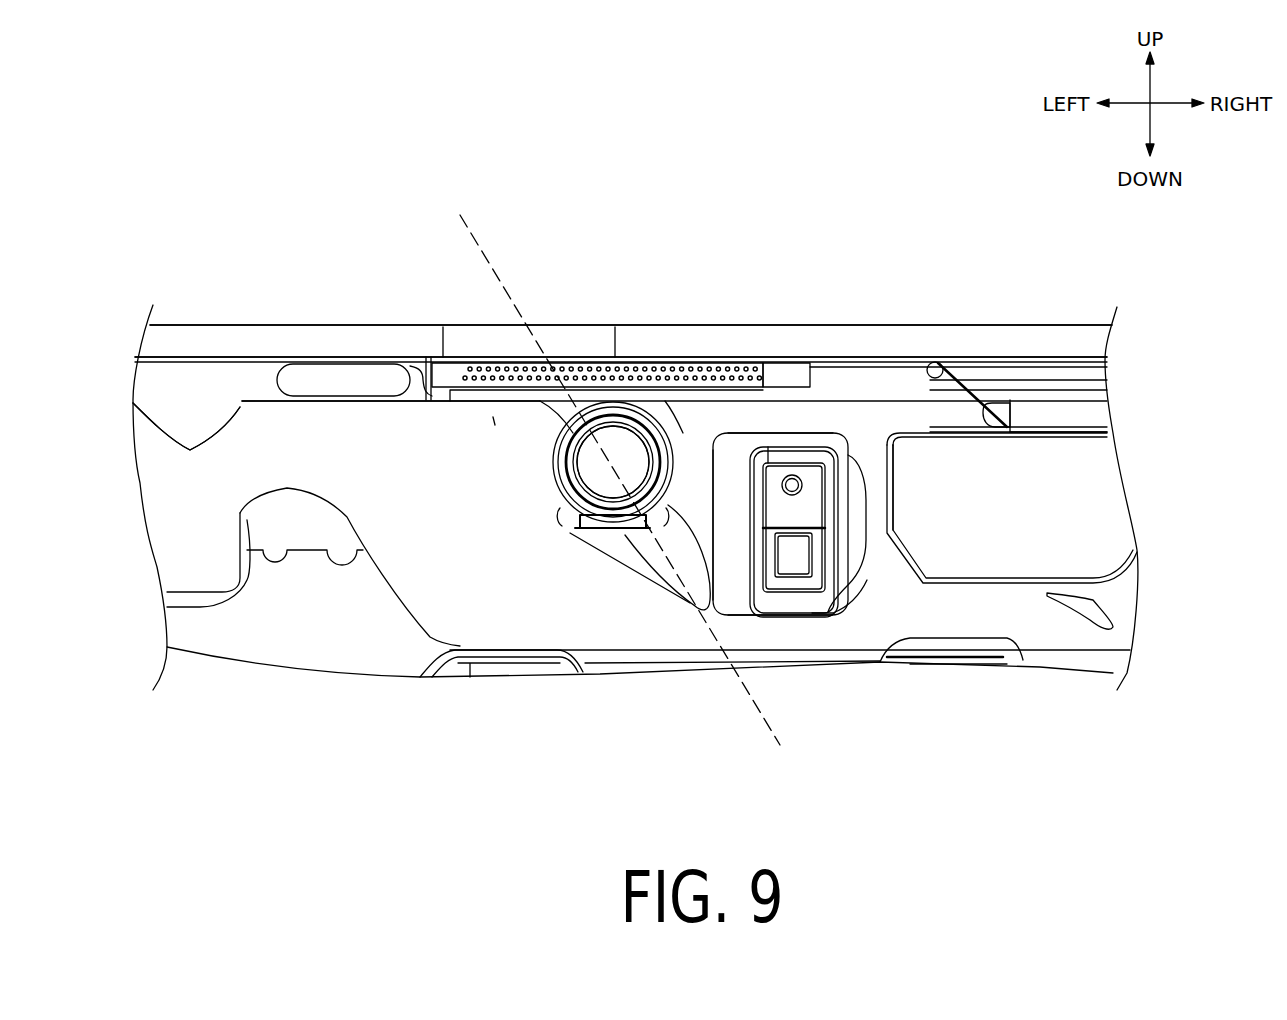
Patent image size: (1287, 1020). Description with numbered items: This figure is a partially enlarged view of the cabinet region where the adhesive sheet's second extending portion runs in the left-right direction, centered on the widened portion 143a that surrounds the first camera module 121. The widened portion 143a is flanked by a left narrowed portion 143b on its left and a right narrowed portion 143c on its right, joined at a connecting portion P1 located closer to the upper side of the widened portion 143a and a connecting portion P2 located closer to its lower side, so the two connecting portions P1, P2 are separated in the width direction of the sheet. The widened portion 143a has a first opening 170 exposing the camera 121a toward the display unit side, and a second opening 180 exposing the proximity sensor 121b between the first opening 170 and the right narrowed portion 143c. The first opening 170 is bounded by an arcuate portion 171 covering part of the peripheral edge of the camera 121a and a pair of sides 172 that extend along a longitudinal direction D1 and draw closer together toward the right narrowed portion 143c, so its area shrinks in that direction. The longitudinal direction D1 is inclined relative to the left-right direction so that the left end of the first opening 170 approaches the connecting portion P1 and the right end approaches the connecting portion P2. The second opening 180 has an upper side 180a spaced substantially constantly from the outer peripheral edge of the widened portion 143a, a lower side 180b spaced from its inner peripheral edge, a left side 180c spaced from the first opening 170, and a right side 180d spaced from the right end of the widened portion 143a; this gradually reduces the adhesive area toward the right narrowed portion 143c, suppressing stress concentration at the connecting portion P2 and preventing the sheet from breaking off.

The first camera module 121 is at (679, 300).
The camera 121a is at (630, 450).
The proximity sensor 121b is at (843, 433).
The widened portion 143a is at (493, 417).
The left narrowed portion 143b is at (240, 405).
The right narrowed portion 143c is at (1018, 600).
The first opening 170 is at (630, 552).
The arcuate portion 171 is at (545, 450).
The pair of sides 172 is at (688, 473).
The second opening 180 is at (812, 597).
The upper side 180a is at (796, 437).
The lower side 180b is at (801, 624).
The left side 180c is at (735, 573).
The right side 180d is at (852, 545).
The connecting portion P1 is at (332, 440).
The connecting portion P2 is at (916, 600).
The longitudinal direction D1 is at (470, 238).